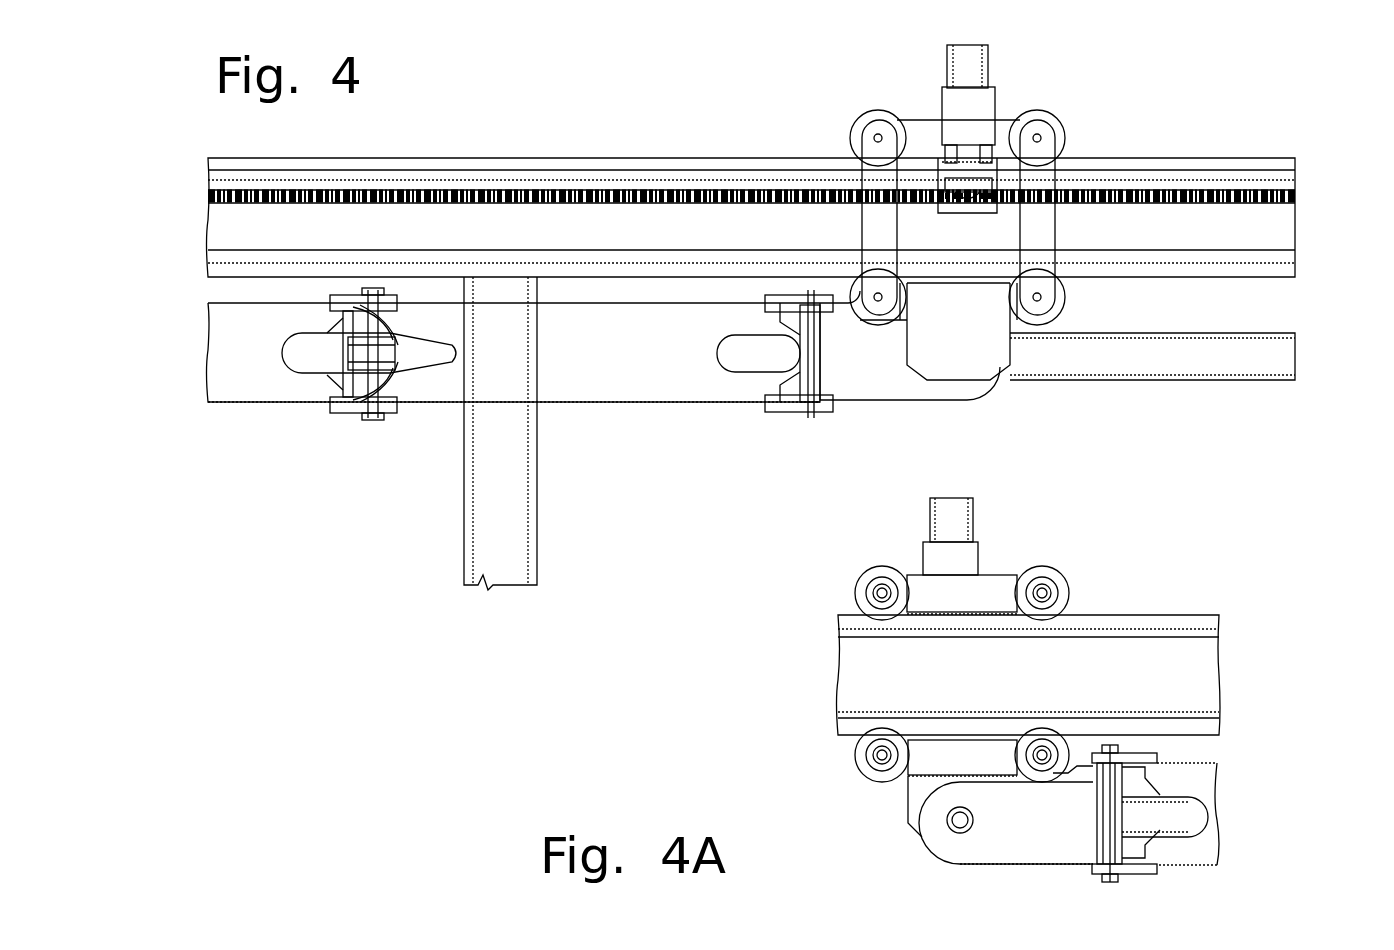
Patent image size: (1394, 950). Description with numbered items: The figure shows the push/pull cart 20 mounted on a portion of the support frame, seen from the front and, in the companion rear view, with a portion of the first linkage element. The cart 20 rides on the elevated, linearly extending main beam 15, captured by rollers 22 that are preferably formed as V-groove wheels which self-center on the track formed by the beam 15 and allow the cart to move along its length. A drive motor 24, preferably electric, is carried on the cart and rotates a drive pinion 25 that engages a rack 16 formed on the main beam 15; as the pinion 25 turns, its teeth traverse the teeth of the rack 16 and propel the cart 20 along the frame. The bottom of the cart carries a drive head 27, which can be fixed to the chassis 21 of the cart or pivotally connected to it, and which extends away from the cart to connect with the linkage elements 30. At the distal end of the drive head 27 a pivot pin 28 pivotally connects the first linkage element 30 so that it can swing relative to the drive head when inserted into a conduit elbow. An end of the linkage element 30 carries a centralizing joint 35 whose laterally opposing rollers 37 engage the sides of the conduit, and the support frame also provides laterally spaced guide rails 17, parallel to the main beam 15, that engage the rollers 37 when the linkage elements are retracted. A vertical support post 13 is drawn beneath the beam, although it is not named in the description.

In FIG. 4, the support post 13 is at (508, 517).
In FIG. 4, the main beam 15 is at (1237, 160).
In FIG. 4A, the main beam 15 is at (855, 677).
In FIG. 4, the rack 16 is at (1245, 205).
In FIG. 4, the guide rails 17 is at (1250, 350).
In FIG. 4, the push/pull cart 20 is at (983, 330).
In FIG. 4, the chassis 21 is at (962, 348).
In FIG. 4A, the chassis 21 is at (918, 787).
In FIG. 4, the rollers 22 is at (870, 122).
In FIG. 4A, the rollers 22 is at (863, 580).
In FIG. 4, the drive motor 24 is at (977, 60).
In FIG. 4A, the drive motor 24 is at (953, 518).
In FIG. 4, the drive pinion 25 is at (983, 207).
In FIG. 4, the drive head 27 is at (875, 377).
In FIG. 4A, the drive head 27 is at (985, 853).
In FIG. 4, the pivot pin 28 is at (807, 410).
In FIG. 4A, the pivot pin 28 is at (1117, 757).
In FIG. 4, the linkage element 30 is at (602, 380).
In FIG. 4A, the linkage element 30 is at (1208, 778).
In FIG. 4, the centralizing joint 35 is at (371, 420).
In FIG. 4, the rollers 37 is at (450, 345).